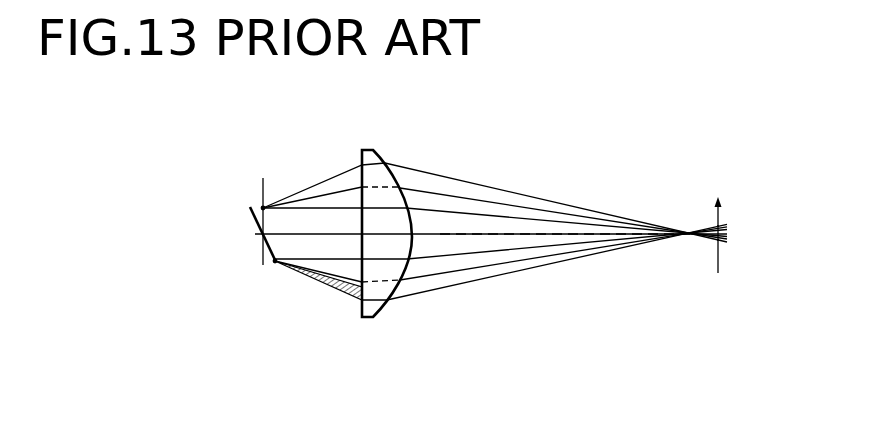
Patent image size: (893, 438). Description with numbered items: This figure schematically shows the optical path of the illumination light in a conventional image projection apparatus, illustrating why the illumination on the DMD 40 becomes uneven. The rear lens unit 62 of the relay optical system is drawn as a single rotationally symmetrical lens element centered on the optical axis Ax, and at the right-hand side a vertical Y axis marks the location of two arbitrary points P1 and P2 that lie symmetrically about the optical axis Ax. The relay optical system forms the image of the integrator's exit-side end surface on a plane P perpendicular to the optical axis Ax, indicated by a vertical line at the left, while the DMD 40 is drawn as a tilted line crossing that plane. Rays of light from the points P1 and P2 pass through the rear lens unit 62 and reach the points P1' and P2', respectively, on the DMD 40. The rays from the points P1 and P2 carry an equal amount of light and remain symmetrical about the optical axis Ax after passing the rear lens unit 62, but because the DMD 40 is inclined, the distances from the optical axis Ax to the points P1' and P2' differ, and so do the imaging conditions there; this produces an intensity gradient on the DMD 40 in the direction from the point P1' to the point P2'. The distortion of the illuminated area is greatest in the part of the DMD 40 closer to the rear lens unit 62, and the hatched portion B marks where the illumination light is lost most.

The DMD 40 is at (255, 222).
The rear lens unit 62 is at (383, 289).
The plane P is at (265, 192).
The point P1' is at (450, 199).
The point P2' is at (471, 276).
The portion B is at (310, 298).
The optical axis Ax is at (518, 235).
The Y axis Y is at (717, 219).
The point P1 is at (756, 259).
The point P2 is at (756, 214).